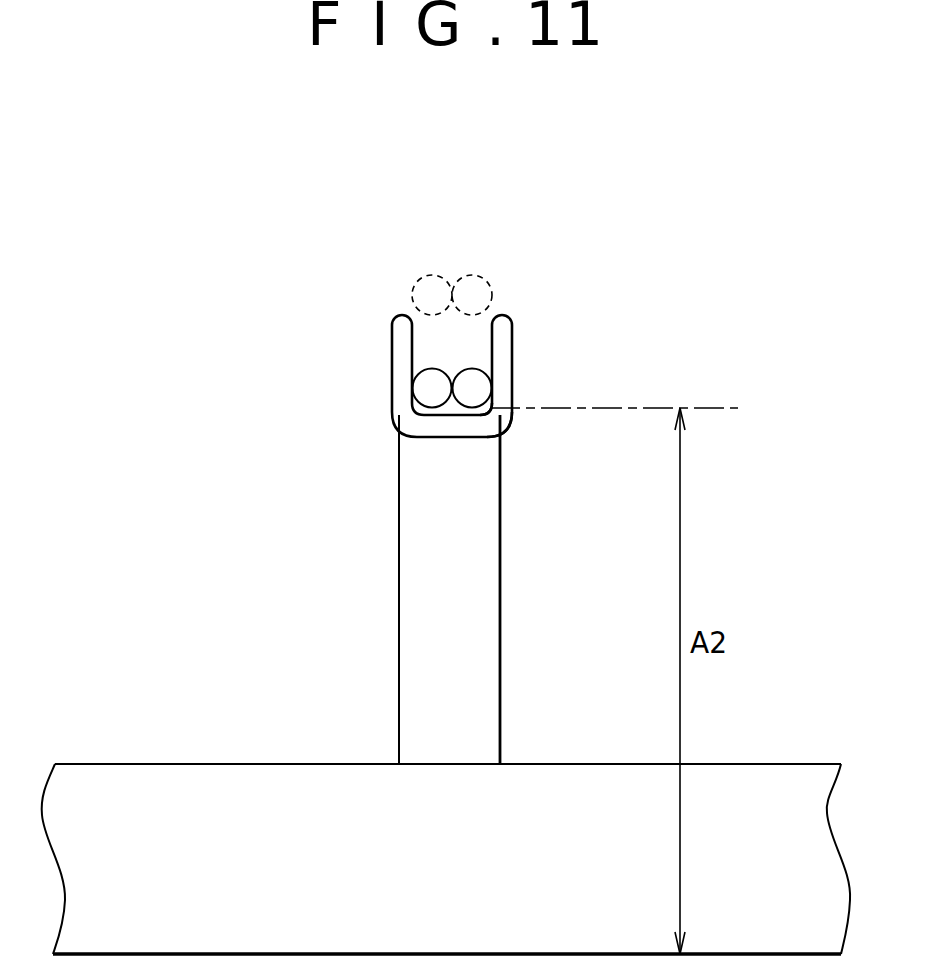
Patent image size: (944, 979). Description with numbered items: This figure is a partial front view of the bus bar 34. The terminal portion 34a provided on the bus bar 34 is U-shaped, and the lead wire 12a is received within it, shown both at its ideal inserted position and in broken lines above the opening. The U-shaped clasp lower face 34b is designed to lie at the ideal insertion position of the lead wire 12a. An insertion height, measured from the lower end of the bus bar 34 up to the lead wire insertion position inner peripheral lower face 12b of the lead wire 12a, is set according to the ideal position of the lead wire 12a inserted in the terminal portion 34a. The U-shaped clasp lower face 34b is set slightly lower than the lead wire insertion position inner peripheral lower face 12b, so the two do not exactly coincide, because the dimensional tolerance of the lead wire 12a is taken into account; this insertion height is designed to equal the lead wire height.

The lead wire 12a is at (477, 275).
The lead wire insertion position inner peripheral lower face 12b is at (400, 417).
The bus bar 34 is at (795, 786).
The terminal portion 34a is at (410, 623).
The U-shaped clasp lower face 34b is at (502, 423).